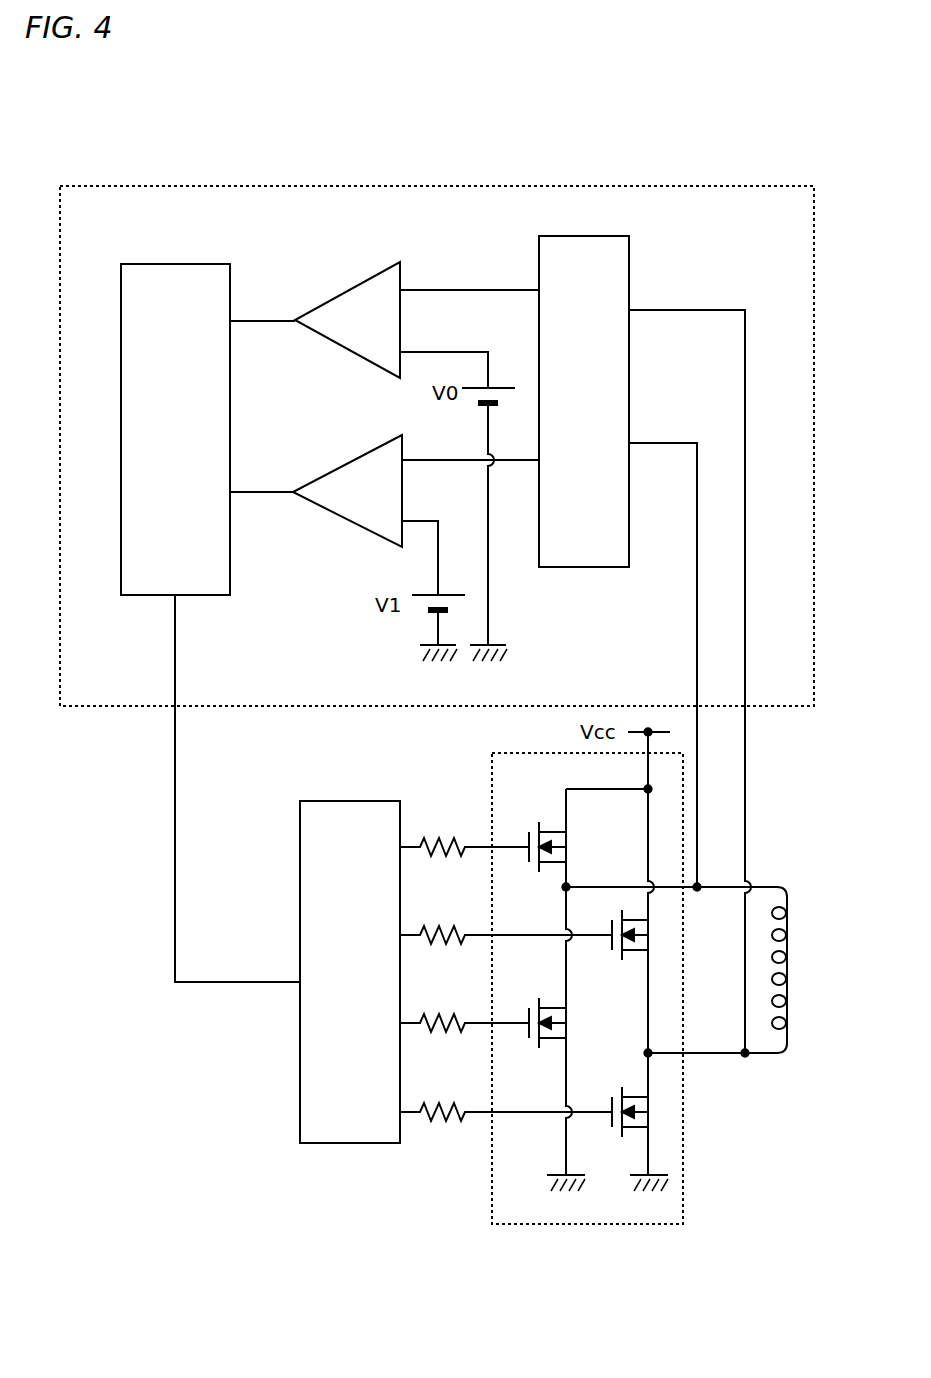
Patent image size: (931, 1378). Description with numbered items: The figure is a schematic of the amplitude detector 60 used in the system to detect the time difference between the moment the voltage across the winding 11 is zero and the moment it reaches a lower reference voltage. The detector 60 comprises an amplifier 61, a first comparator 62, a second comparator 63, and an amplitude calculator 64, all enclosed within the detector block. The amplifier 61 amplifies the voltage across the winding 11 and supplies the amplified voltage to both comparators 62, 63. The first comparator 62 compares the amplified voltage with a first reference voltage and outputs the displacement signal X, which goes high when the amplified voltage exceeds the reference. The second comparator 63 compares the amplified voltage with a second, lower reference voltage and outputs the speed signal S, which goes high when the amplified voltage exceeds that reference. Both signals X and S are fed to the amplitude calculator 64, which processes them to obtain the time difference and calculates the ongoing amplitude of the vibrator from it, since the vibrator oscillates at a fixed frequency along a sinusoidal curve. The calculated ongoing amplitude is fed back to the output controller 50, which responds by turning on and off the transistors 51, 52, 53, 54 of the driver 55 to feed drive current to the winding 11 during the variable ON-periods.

The winding 11 is at (797, 970).
The output controller 50 is at (330, 801).
The transistor 51 is at (523, 827).
The transistor 52 is at (523, 1013).
The transistor 53 is at (618, 962).
The transistor 54 is at (607, 1122).
The driver 55 is at (683, 1148).
The amplitude detector 60 is at (789, 186).
The amplifier 61 is at (620, 236).
The first comparator 62 is at (360, 270).
The second comparator 63 is at (360, 448).
The amplitude calculator 64 is at (145, 264).